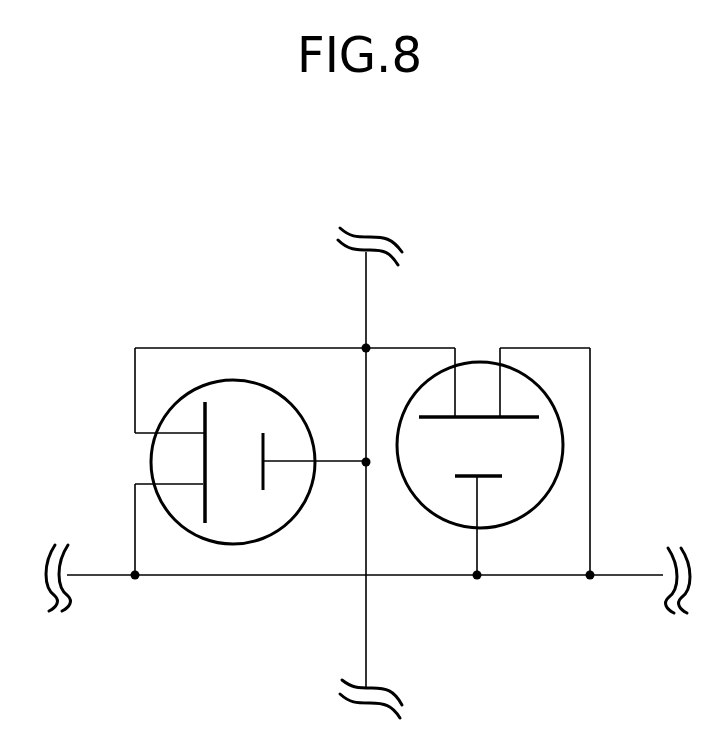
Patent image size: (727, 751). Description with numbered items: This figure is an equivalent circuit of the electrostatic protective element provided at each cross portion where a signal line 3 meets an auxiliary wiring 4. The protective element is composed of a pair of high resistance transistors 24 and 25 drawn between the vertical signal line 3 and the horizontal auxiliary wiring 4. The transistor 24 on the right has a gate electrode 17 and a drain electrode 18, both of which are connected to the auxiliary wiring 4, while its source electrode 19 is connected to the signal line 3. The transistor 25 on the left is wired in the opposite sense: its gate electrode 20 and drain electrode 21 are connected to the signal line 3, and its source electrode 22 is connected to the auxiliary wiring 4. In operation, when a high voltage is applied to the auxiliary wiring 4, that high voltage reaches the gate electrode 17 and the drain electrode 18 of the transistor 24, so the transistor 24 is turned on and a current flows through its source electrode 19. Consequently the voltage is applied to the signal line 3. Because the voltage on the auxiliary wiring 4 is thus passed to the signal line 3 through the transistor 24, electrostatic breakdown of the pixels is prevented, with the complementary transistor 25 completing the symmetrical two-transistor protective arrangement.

The signal line 3 is at (366, 623).
The auxiliary wiring 4 is at (547, 576).
The gate electrode 17 is at (478, 477).
The drain electrode 18 is at (500, 415).
The source electrode 19 is at (456, 417).
The gate electrode 20 is at (263, 458).
The drain electrode 21 is at (202, 433).
The source electrode 22 is at (200, 482).
The high resistance transistor 24 is at (517, 370).
The high resistance transistor 25 is at (201, 382).